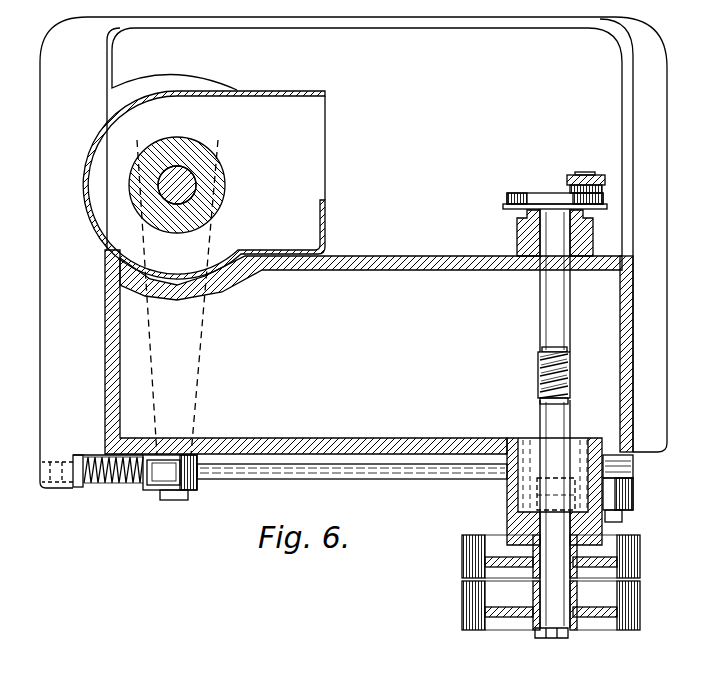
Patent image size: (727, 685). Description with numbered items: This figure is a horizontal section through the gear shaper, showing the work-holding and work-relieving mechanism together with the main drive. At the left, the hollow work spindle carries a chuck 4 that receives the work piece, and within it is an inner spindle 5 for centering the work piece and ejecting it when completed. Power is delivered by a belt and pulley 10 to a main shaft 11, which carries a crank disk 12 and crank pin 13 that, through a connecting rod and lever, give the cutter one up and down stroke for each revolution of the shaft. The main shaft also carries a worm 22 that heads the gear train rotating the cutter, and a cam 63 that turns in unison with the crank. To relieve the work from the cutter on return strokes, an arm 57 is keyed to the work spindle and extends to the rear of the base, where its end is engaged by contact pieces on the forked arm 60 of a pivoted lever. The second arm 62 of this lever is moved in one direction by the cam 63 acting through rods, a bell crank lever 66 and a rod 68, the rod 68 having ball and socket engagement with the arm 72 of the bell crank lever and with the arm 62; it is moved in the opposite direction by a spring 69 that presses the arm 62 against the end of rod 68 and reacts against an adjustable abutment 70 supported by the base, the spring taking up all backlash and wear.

The chuck 4 is at (212, 188).
The inner spindle 5 is at (188, 174).
The belt and pulley 10 is at (473, 595).
The main shaft 11 is at (555, 318).
The crank disk 12 is at (525, 203).
The crank pin 13 is at (590, 175).
The worm 22 is at (542, 382).
The arm 57 is at (195, 385).
The forked arm 60 is at (198, 487).
The second arm 62 is at (162, 478).
The cam 63 is at (535, 492).
The bell crank lever 66 is at (633, 498).
The rod 68 is at (405, 470).
The spring 69 is at (120, 484).
The adjustable abutment 70 is at (80, 489).
The arm 72 is at (623, 472).